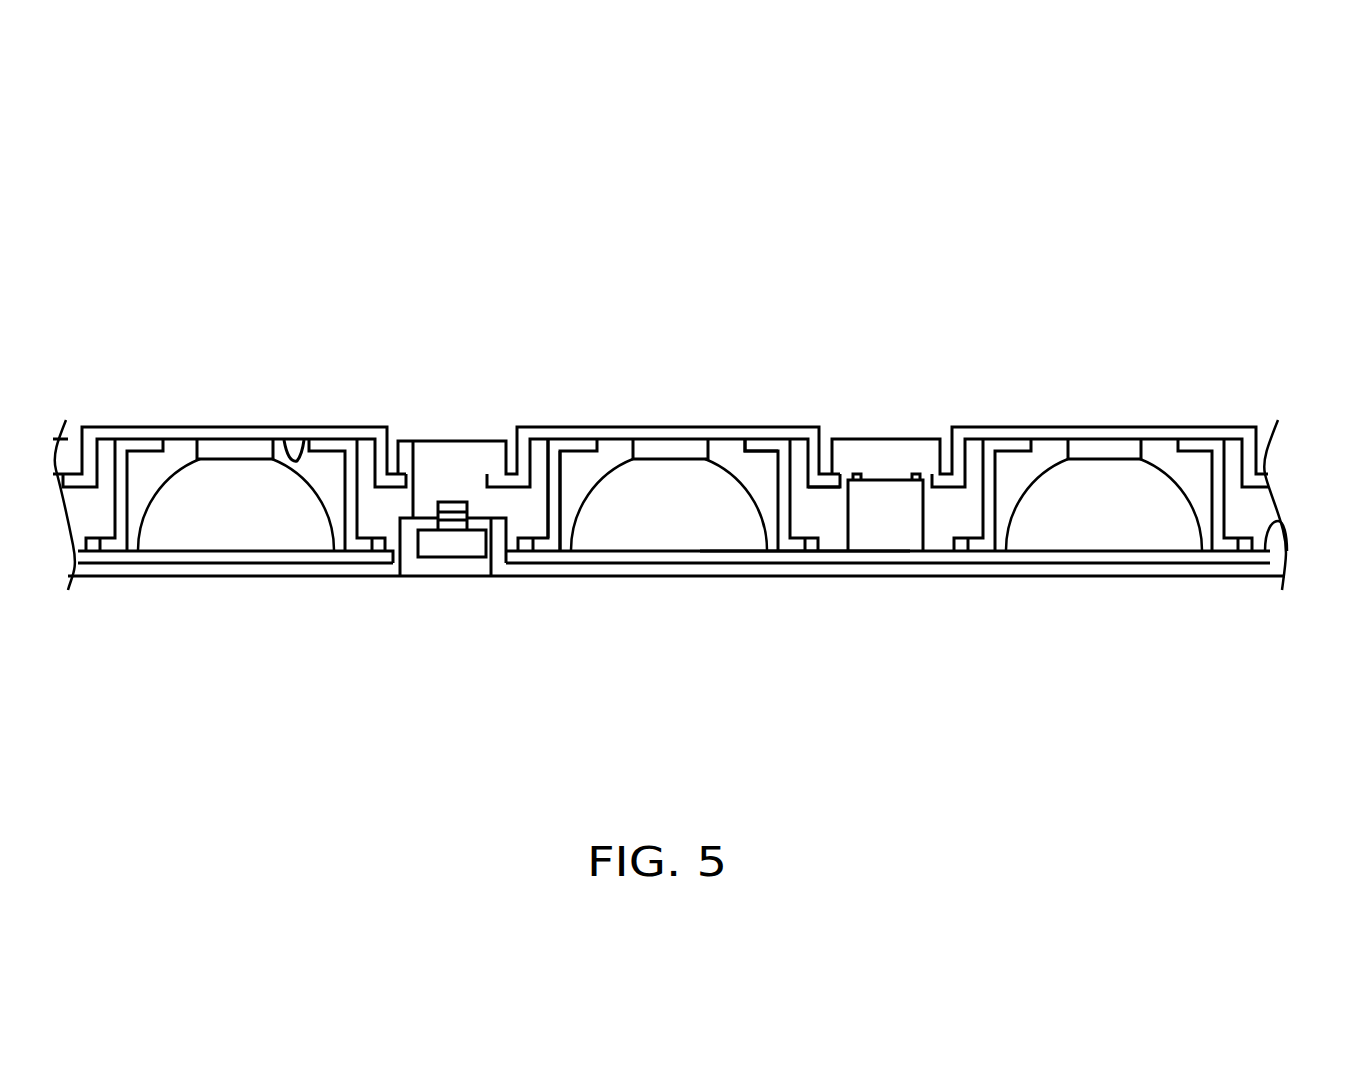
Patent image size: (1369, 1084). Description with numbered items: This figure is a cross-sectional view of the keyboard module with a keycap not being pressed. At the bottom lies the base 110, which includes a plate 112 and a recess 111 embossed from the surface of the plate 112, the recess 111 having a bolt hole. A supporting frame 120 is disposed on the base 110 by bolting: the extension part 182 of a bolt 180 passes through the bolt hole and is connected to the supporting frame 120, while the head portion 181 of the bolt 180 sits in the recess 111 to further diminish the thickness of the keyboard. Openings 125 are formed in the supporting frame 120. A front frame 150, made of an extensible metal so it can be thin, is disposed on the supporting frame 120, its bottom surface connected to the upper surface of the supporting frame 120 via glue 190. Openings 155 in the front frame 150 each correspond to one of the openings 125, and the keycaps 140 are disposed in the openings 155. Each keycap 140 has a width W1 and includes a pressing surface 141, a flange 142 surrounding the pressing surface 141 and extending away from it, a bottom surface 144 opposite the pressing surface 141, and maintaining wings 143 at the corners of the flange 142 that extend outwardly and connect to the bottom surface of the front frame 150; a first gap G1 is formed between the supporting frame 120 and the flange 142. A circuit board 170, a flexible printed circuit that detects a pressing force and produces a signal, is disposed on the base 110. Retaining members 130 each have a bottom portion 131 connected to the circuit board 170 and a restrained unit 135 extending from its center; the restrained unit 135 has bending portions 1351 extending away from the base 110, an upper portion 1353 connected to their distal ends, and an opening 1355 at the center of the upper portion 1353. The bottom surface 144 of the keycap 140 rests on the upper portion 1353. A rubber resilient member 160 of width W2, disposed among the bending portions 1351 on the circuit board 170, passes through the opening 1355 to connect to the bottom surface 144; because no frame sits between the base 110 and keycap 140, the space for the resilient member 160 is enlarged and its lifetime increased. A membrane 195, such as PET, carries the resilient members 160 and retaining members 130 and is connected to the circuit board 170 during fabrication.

The base 110 is at (676, 637).
The recess 111 is at (403, 577).
The plate 112 is at (234, 567).
The supporting frame 120 is at (907, 541).
The opening 125 is at (822, 516).
The retaining member 130 is at (669, 472).
The bottom portion 131 is at (533, 549).
The restrained unit 135 is at (681, 451).
The bending portion 1351 is at (555, 503).
The upper portion 1353 is at (763, 450).
The opening 1355 is at (745, 451).
The keycap 140 is at (660, 412).
The pressing surface 141 is at (263, 428).
The flange 142 is at (88, 452).
The maintaining wing 143 is at (70, 472).
The bottom surface 144 is at (312, 391).
The front frame 150 is at (872, 446).
The opening 155 is at (833, 474).
The resilient member 160 is at (716, 536).
The circuit board 170 is at (781, 566).
The bolt 180 is at (441, 582).
The head portion 181 is at (467, 543).
The extension part 182 is at (442, 543).
The glue 190 is at (912, 473).
The membrane 195 is at (1272, 521).
The width of keycap W1 is at (1257, 427).
The width of resilient member W2 is at (1005, 556).
The first gap G1 is at (410, 267).